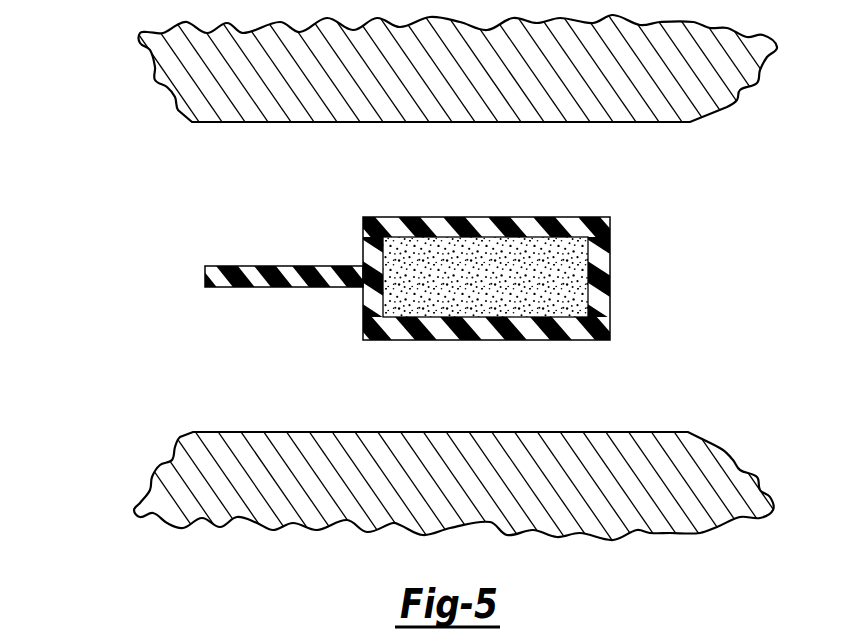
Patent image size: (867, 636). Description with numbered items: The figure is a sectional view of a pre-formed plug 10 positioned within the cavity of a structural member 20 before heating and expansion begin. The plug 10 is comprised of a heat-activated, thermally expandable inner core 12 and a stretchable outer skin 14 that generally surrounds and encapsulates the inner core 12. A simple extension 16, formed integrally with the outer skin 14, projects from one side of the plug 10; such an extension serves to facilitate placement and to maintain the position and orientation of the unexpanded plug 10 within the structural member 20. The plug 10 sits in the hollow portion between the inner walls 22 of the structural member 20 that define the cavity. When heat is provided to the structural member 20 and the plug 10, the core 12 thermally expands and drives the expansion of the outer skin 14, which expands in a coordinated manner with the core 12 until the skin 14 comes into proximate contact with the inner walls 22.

The pre-formed plug 10 is at (403, 240).
The inner core 12 is at (578, 298).
The outer skin 14 is at (610, 240).
The extension 16 is at (287, 272).
The structural member 20 is at (733, 124).
The inner walls 22 is at (600, 122).